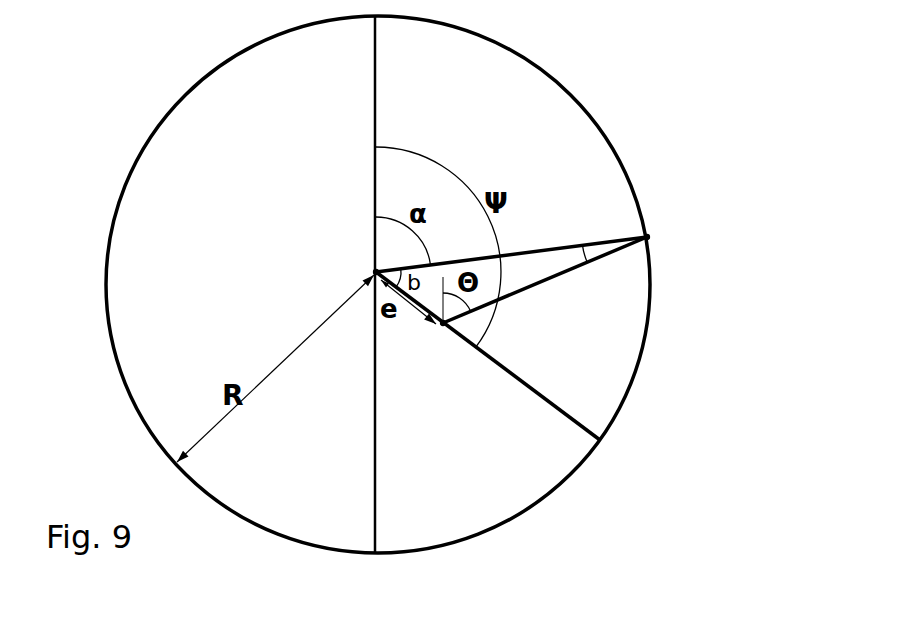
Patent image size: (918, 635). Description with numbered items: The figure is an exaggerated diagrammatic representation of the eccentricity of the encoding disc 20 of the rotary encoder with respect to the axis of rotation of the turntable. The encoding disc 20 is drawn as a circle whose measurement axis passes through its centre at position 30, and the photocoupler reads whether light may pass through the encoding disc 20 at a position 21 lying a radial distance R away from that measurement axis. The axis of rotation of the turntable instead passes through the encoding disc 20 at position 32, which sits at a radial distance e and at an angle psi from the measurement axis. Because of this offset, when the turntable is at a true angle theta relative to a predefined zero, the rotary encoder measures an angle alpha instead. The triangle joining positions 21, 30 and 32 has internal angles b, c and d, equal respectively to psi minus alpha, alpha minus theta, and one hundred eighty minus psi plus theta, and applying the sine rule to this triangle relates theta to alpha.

The encoding disc 20 is at (505, 47).
The reading position 21 is at (647, 237).
The centre of the encoding disc 30 is at (377, 272).
The axis of rotation position 32 is at (451, 335).